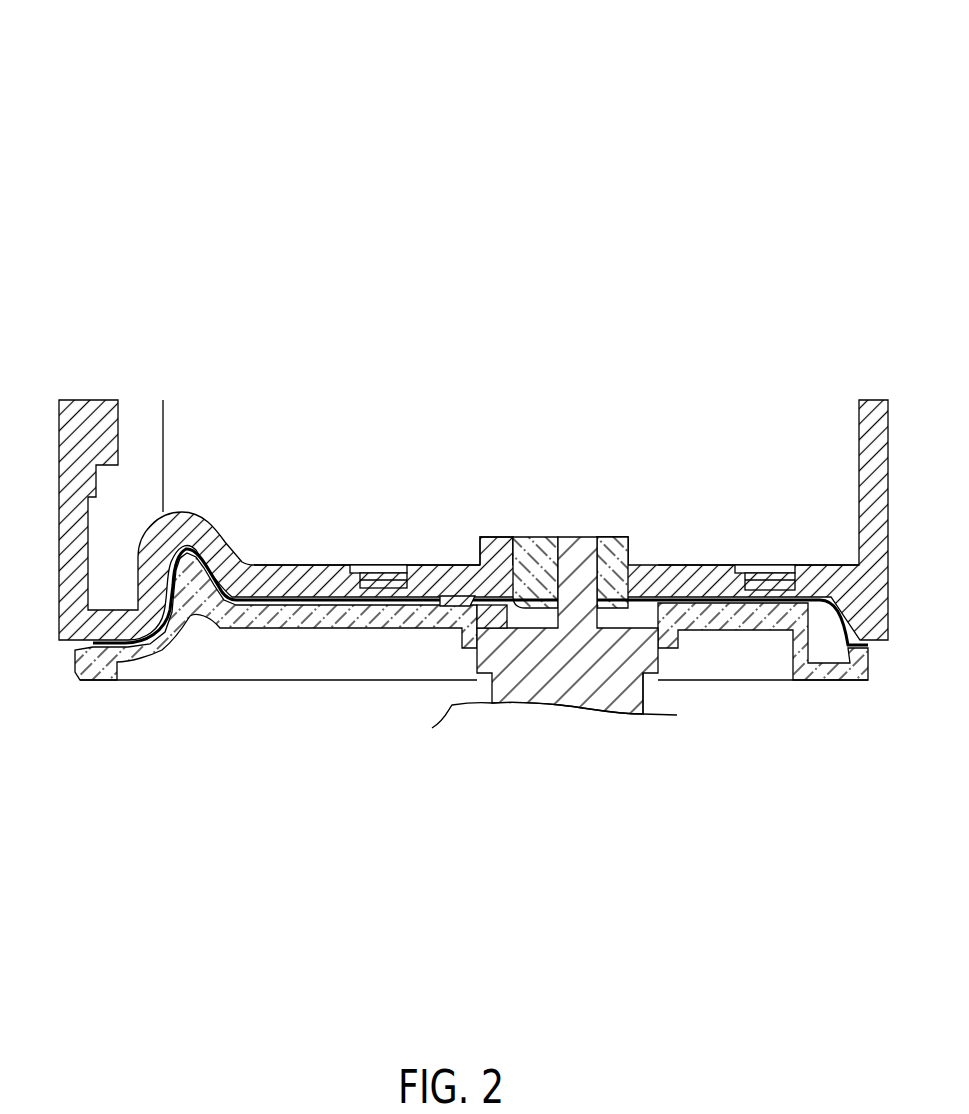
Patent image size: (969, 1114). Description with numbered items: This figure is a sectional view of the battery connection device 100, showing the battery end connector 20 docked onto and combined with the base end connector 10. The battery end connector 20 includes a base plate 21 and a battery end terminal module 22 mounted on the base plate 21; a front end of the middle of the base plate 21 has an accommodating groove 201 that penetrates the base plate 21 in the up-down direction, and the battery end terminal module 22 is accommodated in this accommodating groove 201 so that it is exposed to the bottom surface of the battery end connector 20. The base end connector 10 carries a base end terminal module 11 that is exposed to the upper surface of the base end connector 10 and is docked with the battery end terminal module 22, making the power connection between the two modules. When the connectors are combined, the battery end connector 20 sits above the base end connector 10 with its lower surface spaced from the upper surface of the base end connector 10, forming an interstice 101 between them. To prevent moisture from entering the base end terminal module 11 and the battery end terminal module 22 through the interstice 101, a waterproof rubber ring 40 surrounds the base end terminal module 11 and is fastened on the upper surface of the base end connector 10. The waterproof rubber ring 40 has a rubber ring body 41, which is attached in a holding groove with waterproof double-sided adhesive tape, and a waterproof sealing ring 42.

The battery connection device 100 is at (90, 42).
The battery end connector 20 is at (183, 385).
The base plate 21 is at (295, 568).
The battery end terminal module 22 is at (615, 537).
The accommodating groove 201 is at (513, 537).
The base end connector 10 is at (122, 722).
The base end terminal module 11 is at (495, 687).
The interstice 101 is at (610, 618).
The waterproof rubber ring 40 is at (450, 652).
The rubber ring body 41 is at (447, 600).
The waterproof sealing ring 42 is at (427, 606).